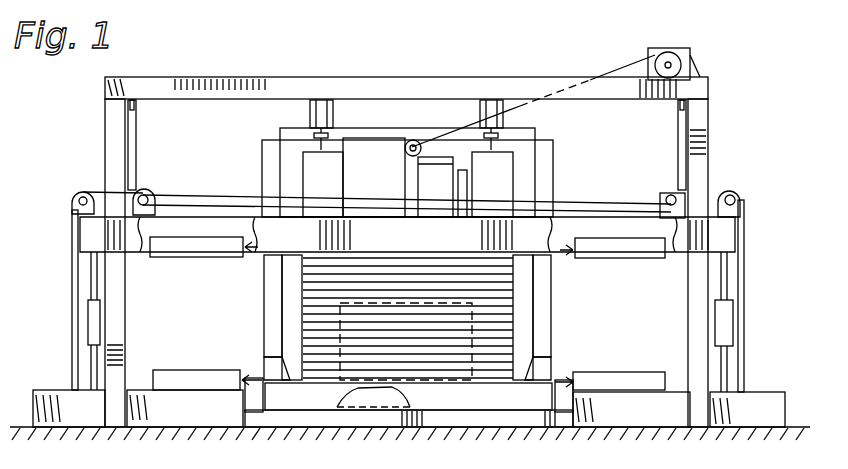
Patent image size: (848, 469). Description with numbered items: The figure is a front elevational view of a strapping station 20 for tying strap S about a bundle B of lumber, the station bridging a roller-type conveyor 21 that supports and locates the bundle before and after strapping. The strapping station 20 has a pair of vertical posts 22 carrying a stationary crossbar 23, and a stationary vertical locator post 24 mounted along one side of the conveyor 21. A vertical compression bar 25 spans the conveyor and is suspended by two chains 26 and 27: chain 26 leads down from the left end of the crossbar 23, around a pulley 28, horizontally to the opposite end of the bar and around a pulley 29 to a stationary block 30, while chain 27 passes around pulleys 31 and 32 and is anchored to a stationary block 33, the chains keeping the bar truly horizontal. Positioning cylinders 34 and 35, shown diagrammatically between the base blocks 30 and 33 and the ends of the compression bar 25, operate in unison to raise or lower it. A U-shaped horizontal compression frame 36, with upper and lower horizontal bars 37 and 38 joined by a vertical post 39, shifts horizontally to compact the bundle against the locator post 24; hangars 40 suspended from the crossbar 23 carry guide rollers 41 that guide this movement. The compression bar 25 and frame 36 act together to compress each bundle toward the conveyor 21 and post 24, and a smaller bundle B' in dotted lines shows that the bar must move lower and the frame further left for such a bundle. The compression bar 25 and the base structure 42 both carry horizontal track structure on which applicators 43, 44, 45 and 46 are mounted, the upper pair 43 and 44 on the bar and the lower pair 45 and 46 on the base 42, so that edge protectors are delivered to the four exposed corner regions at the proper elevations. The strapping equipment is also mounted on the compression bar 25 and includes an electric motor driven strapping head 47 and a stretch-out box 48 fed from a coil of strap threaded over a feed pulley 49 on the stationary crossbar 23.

The strapping station 20 is at (712, 168).
The conveyor 21 is at (527, 420).
The vertical posts 22 is at (112, 110).
The stationary crossbar 23 is at (166, 93).
The stationary vertical locator post 24 is at (292, 287).
The vertical compression bar 25 is at (404, 250).
The chain 26 is at (218, 200).
The chain 27 is at (560, 198).
The pulley 28 is at (143, 192).
The pulley 29 is at (742, 196).
The stationary block 30 is at (758, 402).
The pulley 31 is at (671, 193).
The pulley 32 is at (85, 190).
The stationary block 33 is at (52, 400).
The positioning cylinder 34 is at (88, 315).
The positioning cylinder 35 is at (735, 308).
The horizontal compression frame 36 is at (542, 305).
The upper horizontal bar 37 is at (440, 142).
The lower horizontal bar 38 is at (370, 400).
The vertical post 39 is at (542, 338).
The hangars 40 is at (325, 110).
The guide rollers 41 is at (321, 150).
The base structure 42 is at (184, 420).
The applicator 43 is at (170, 258).
The applicator 44 is at (618, 258).
The applicator 45 is at (194, 364).
The applicator 46 is at (656, 366).
The strapping head 47 is at (447, 197).
The stretch-out box 48 is at (384, 180).
The feed pulley 49 is at (672, 57).
The strap S is at (618, 72).
The bundle B is at (408, 318).
The bundle B' is at (406, 341).